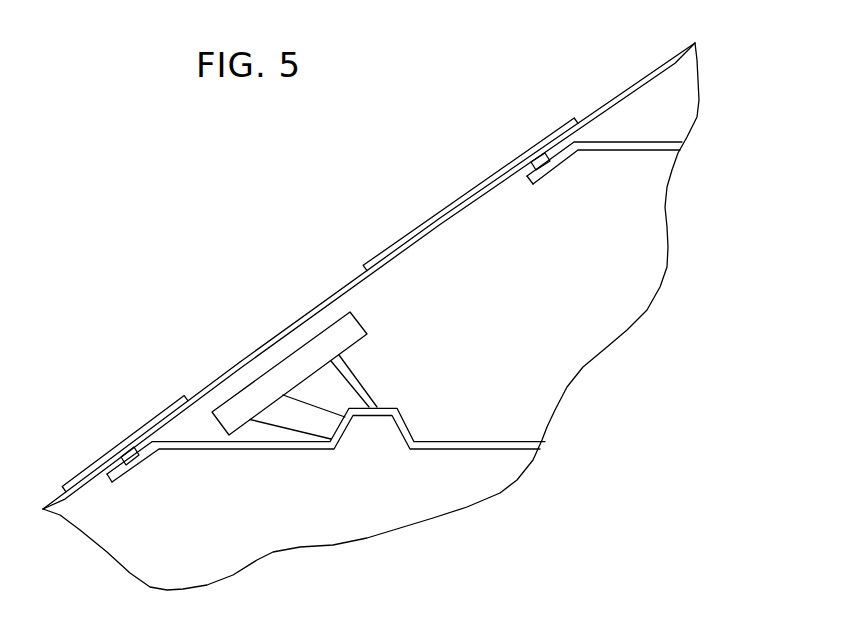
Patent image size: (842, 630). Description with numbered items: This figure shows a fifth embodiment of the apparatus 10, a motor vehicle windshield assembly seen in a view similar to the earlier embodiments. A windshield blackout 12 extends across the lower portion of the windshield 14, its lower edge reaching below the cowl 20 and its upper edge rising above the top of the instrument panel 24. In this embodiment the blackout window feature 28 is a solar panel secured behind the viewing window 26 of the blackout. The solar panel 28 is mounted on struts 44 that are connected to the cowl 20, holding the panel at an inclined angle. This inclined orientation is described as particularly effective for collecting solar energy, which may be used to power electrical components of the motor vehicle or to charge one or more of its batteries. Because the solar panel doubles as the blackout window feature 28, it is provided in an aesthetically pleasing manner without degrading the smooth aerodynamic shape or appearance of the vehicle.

The apparatus 10 is at (176, 236).
The windshield blackout 12 is at (101, 454).
The windshield 14 is at (628, 90).
The cowl 20 is at (428, 449).
The instrument panel 24 is at (620, 150).
The viewing window 26 is at (270, 336).
The blackout window feature 28 is at (277, 380).
The struts 44 is at (371, 388).